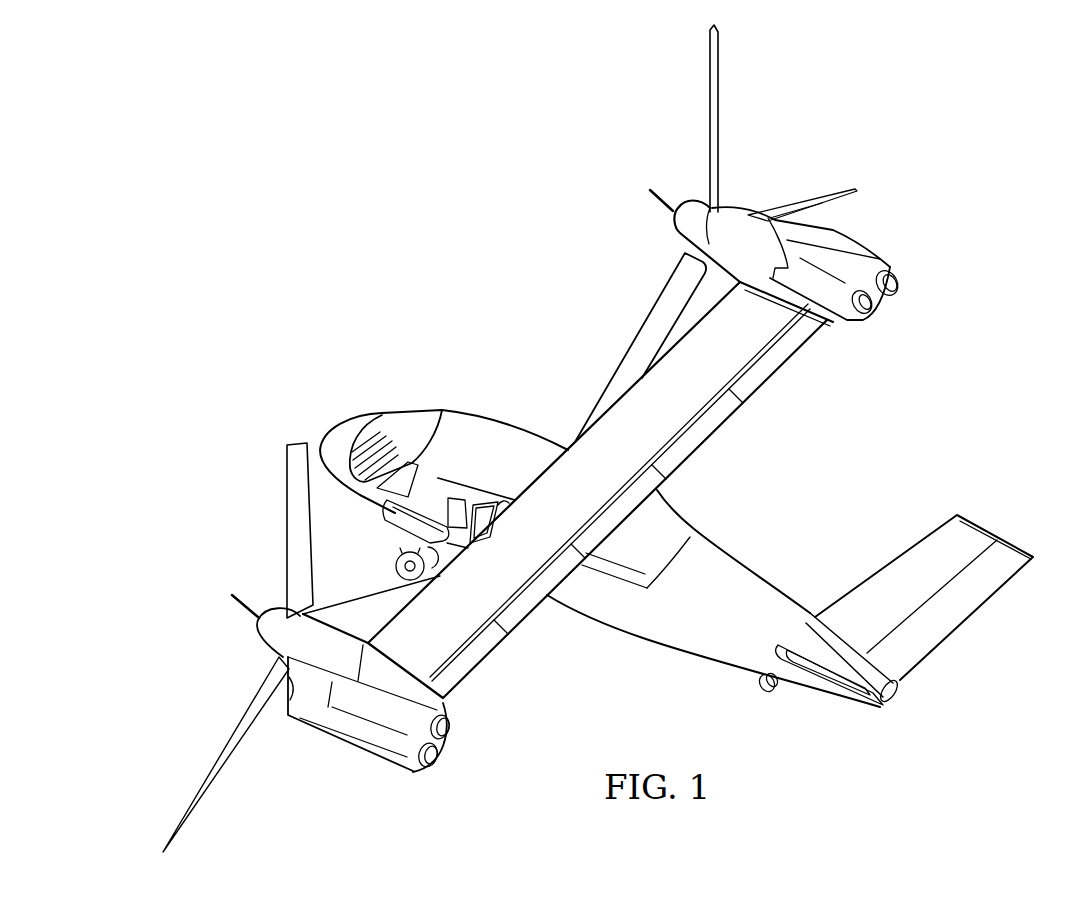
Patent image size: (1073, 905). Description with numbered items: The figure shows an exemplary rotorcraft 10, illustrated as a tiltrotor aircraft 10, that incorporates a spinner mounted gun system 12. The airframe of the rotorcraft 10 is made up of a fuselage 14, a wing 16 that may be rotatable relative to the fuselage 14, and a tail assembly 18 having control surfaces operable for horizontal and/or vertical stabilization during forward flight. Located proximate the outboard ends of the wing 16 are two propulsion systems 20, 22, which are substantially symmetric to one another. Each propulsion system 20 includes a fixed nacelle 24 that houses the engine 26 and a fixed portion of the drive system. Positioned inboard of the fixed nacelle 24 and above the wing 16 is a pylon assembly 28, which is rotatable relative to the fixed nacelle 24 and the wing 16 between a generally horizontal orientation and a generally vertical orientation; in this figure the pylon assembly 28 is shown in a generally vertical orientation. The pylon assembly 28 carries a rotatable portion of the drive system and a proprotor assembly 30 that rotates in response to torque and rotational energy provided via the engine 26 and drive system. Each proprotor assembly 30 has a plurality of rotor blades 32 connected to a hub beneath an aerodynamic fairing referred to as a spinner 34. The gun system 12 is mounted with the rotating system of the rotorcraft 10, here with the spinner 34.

The rotorcraft 10 is at (406, 329).
The spinner mounted gun system 12 is at (668, 183).
The fuselage 14 is at (465, 412).
The wing 16 is at (402, 630).
The tail assembly 18 is at (963, 627).
The propulsion system 20 is at (203, 706).
The propulsion system 22 is at (883, 213).
The fixed nacelle 24 is at (330, 742).
The engine 26 is at (440, 760).
The pylon assembly 28 is at (777, 237).
The proprotor assembly 30 is at (620, 234).
The rotor blades 32 is at (285, 508).
The spinner 34 is at (262, 643).